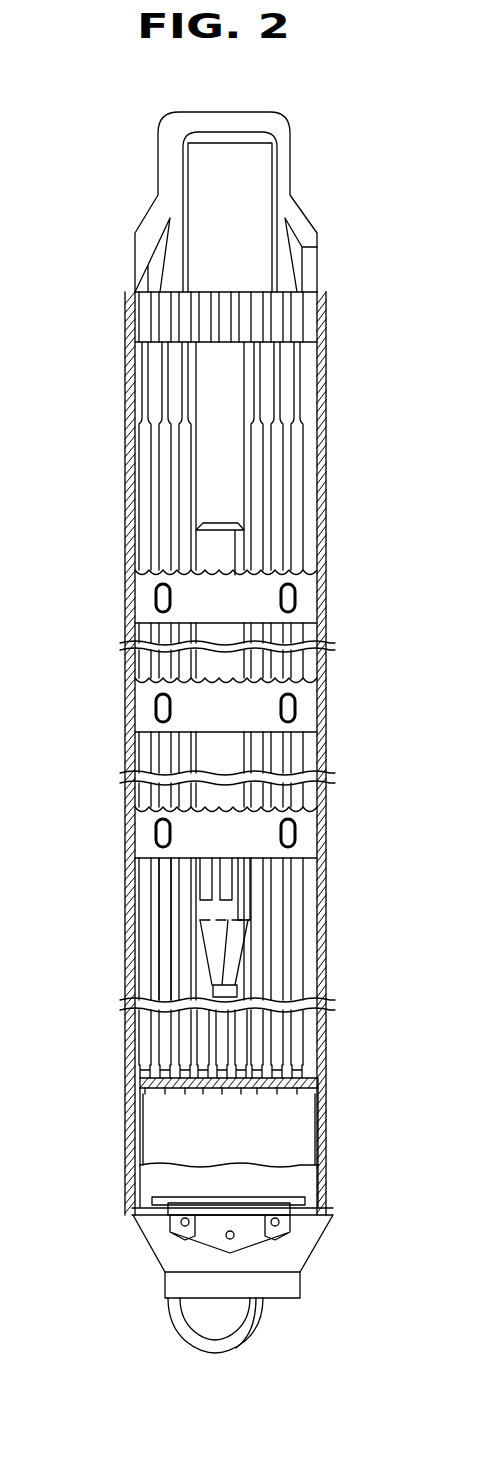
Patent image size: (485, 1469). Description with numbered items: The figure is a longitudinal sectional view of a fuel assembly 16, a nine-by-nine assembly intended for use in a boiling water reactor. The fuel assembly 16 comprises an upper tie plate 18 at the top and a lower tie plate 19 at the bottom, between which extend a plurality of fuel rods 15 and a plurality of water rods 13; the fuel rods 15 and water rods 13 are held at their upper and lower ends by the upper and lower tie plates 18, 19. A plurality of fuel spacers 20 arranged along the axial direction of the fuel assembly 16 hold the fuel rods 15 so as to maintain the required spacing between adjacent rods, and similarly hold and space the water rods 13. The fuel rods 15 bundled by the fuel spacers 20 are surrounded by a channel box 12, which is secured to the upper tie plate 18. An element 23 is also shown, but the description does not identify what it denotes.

The channel box 12 is at (332, 1040).
The water rod 13 is at (200, 550).
The fuel rod 15 is at (315, 933).
The fuel assembly 16 is at (340, 298).
The upper tie plate 18 is at (140, 311).
The lower tie plate 19 is at (322, 1240).
The fuel spacer 20 is at (312, 832).
The part-length fuel rod 23 is at (155, 983).